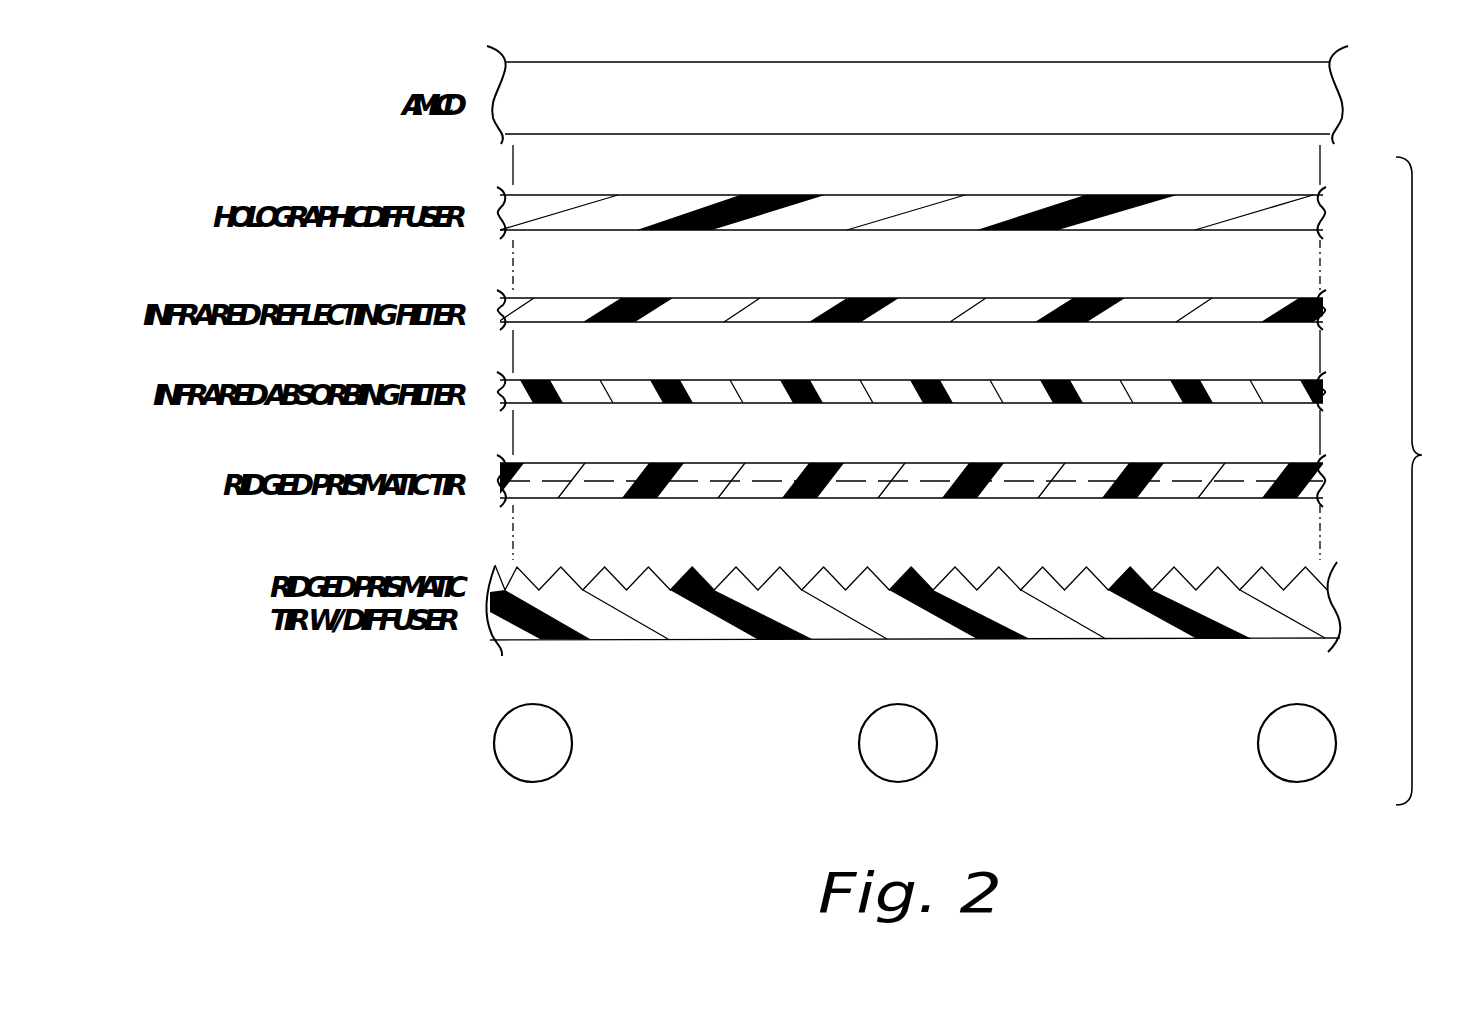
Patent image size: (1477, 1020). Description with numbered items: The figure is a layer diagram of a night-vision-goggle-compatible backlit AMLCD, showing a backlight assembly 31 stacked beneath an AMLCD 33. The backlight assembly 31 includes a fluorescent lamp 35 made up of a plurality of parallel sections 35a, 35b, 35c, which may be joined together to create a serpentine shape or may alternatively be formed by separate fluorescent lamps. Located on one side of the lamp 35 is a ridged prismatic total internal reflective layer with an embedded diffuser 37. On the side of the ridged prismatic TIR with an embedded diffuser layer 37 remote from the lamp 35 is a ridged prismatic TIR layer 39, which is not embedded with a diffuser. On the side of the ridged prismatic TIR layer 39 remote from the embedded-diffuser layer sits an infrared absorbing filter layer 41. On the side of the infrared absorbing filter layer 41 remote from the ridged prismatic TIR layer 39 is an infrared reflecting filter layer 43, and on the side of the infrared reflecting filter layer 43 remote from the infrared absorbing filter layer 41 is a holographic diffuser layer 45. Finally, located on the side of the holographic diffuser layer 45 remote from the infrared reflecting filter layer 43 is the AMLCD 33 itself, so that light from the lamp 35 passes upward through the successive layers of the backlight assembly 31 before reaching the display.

The backlight assembly 31 is at (1431, 481).
The AMLCD 33 is at (1336, 97).
The fluorescent lamp 35 is at (949, 741).
The parallel section 35a is at (560, 771).
The parallel section 35b is at (925, 771).
The parallel section 35c is at (1323, 771).
The ridged prismatic TIR with an embedded diffuser layer 37 is at (1332, 588).
The ridged prismatic TIR layer 39 is at (1330, 473).
The infrared absorbing filter (IAF) layer 41 is at (1330, 383).
The IRF layer 43 is at (1330, 300).
The holographic diffuser layer 45 is at (1330, 203).